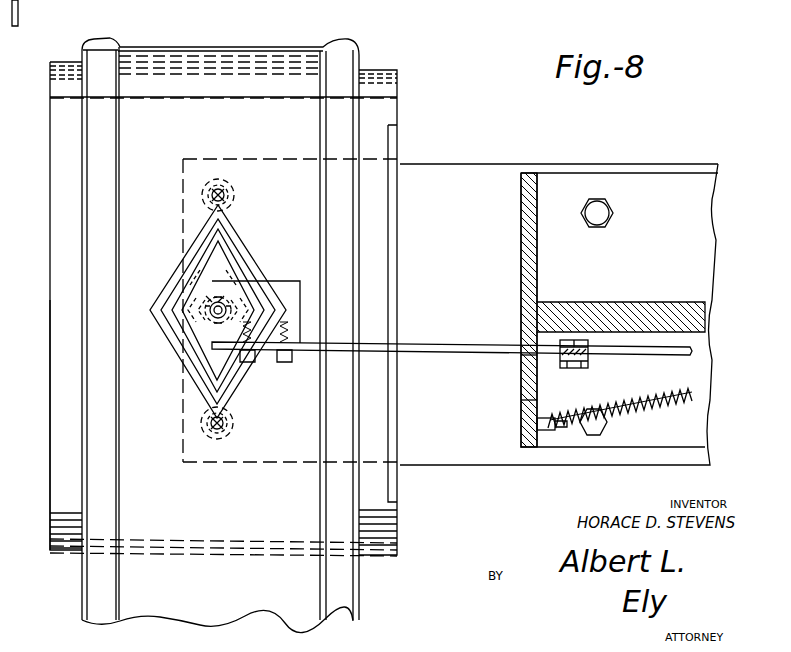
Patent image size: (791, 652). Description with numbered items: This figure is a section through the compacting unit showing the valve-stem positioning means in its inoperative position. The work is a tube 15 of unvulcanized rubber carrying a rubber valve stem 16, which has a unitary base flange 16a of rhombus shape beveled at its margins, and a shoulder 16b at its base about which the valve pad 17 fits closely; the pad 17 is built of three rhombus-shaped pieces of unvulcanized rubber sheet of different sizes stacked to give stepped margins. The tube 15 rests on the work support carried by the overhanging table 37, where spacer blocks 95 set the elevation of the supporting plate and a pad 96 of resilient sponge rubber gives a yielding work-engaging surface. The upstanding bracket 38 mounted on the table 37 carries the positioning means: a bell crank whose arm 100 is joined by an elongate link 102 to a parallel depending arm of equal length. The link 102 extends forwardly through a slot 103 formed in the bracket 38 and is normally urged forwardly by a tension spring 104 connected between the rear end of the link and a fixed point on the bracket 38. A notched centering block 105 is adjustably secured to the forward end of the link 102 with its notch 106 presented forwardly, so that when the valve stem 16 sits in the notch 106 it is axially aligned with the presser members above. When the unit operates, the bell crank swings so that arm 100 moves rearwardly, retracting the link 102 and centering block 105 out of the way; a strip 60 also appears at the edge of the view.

The tube 15 is at (298, 50).
The valve stem 16 is at (206, 318).
The base flange 16a is at (240, 265).
The shoulder 16b is at (205, 309).
The valve pad 17 is at (172, 283).
The overhanging table 37 is at (482, 166).
The bracket 38 is at (522, 404).
The seal strip 60 is at (39, 13).
The spacer blocks 95 is at (236, 189).
The pad 96 is at (56, 482).
The bell crank arm 100 is at (588, 368).
The link 102 is at (488, 346).
The slot 103 is at (522, 358).
The tension spring 104 is at (650, 415).
The centering block 105 is at (285, 283).
The notch 106 is at (208, 300).